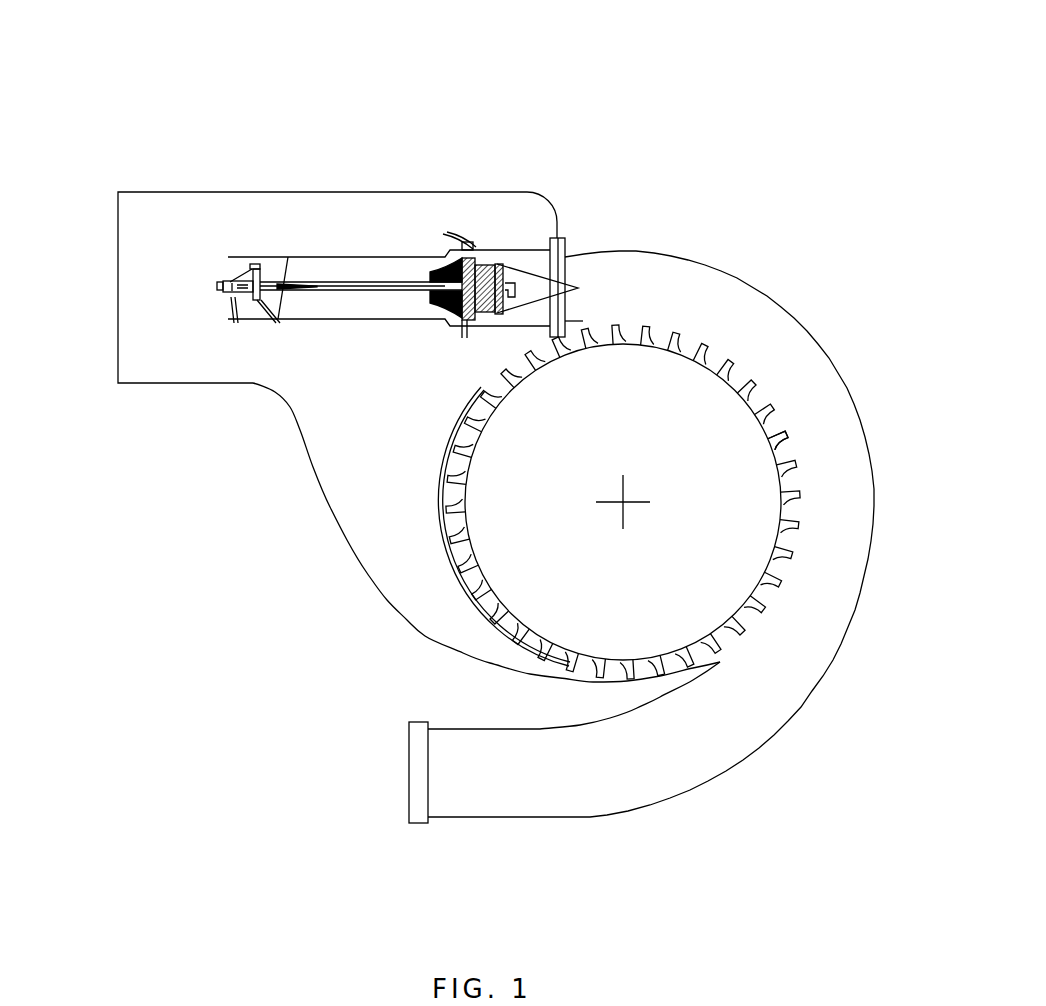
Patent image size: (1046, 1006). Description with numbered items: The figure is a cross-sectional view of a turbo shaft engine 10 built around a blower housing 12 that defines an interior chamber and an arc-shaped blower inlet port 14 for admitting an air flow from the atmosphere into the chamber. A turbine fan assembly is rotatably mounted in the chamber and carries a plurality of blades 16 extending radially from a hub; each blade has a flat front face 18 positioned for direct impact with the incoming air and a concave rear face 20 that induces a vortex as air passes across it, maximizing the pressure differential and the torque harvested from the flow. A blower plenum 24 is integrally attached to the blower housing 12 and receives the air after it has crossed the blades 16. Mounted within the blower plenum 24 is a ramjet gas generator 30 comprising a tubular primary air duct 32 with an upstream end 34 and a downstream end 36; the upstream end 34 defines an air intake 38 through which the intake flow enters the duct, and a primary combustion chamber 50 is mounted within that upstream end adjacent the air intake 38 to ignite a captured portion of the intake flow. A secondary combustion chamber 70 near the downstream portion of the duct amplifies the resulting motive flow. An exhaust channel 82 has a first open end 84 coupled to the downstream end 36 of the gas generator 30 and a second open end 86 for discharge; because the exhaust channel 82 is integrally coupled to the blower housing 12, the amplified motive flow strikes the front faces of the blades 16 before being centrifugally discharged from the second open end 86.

The turbo shaft engine 10 is at (652, 93).
The blower housing 12 is at (380, 600).
The blower inlet port 14 is at (437, 548).
The blades 16 is at (790, 437).
The front face 18 is at (783, 432).
The rear face 20 is at (787, 437).
The blower plenum 24 is at (118, 312).
The ramjet gas generator 30 is at (372, 240).
The primary air duct 32 is at (322, 256).
The upstream end 34 is at (260, 328).
The downstream end 36 is at (490, 345).
The air intake 38 is at (252, 266).
The primary combustion chamber 50 is at (227, 283).
The secondary combustion chamber 70 is at (489, 262).
The exhaust channel 82 is at (763, 270).
The first open end 84 is at (567, 270).
The second open end 86 is at (409, 770).